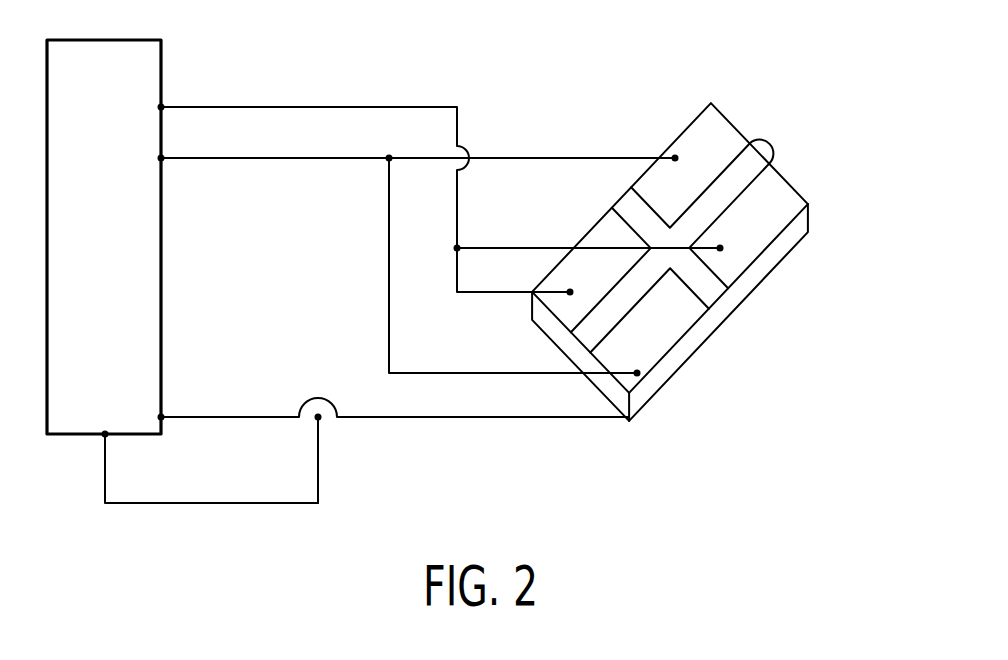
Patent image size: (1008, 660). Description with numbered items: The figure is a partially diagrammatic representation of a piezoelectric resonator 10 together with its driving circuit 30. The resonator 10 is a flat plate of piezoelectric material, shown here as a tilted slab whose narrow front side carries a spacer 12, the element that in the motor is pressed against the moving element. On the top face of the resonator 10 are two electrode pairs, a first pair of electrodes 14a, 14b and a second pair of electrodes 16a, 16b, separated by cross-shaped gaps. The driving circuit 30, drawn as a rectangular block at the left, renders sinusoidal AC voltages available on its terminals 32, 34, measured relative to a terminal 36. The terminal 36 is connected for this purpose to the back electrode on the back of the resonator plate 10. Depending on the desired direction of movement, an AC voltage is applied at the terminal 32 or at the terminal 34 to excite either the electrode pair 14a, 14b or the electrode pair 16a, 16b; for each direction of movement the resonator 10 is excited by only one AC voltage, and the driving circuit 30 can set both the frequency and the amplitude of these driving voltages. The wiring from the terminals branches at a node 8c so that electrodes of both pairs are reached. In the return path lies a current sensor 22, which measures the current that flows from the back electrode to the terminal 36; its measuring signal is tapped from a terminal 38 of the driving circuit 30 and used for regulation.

The piezoelectric resonator 10 is at (703, 345).
The spacer 12 is at (771, 143).
The electrode 14a is at (707, 120).
The electrode 14b is at (647, 360).
The electrode 16a is at (568, 310).
The electrode 16b is at (777, 199).
The connection node 8c is at (390, 160).
The current sensor 22 is at (319, 419).
The driving circuit 30 is at (111, 268).
The terminal 32 is at (163, 107).
The terminal 34 is at (162, 160).
The terminal 36 is at (163, 416).
The terminal 38 is at (105, 433).